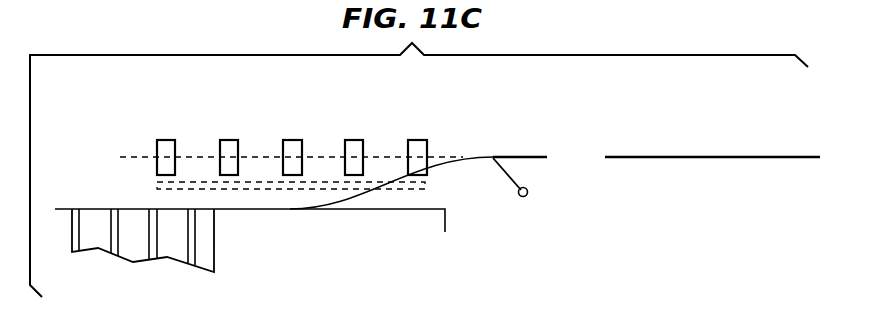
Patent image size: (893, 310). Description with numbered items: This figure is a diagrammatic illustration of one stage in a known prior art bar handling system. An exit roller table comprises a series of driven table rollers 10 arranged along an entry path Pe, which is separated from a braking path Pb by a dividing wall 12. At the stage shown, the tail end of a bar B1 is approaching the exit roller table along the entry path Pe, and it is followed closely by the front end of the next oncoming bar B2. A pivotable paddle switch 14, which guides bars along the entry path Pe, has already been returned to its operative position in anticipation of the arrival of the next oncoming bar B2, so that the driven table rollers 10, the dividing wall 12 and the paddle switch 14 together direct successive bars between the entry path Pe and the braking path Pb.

The driven table rollers 10 is at (232, 140).
The dividing wall 12 is at (305, 187).
The pivotable paddle switch 14 is at (509, 178).
The entry path Pe is at (137, 157).
The braking path Pb is at (87, 209).
The bar B1 is at (517, 157).
The next oncoming bar B2 is at (683, 157).